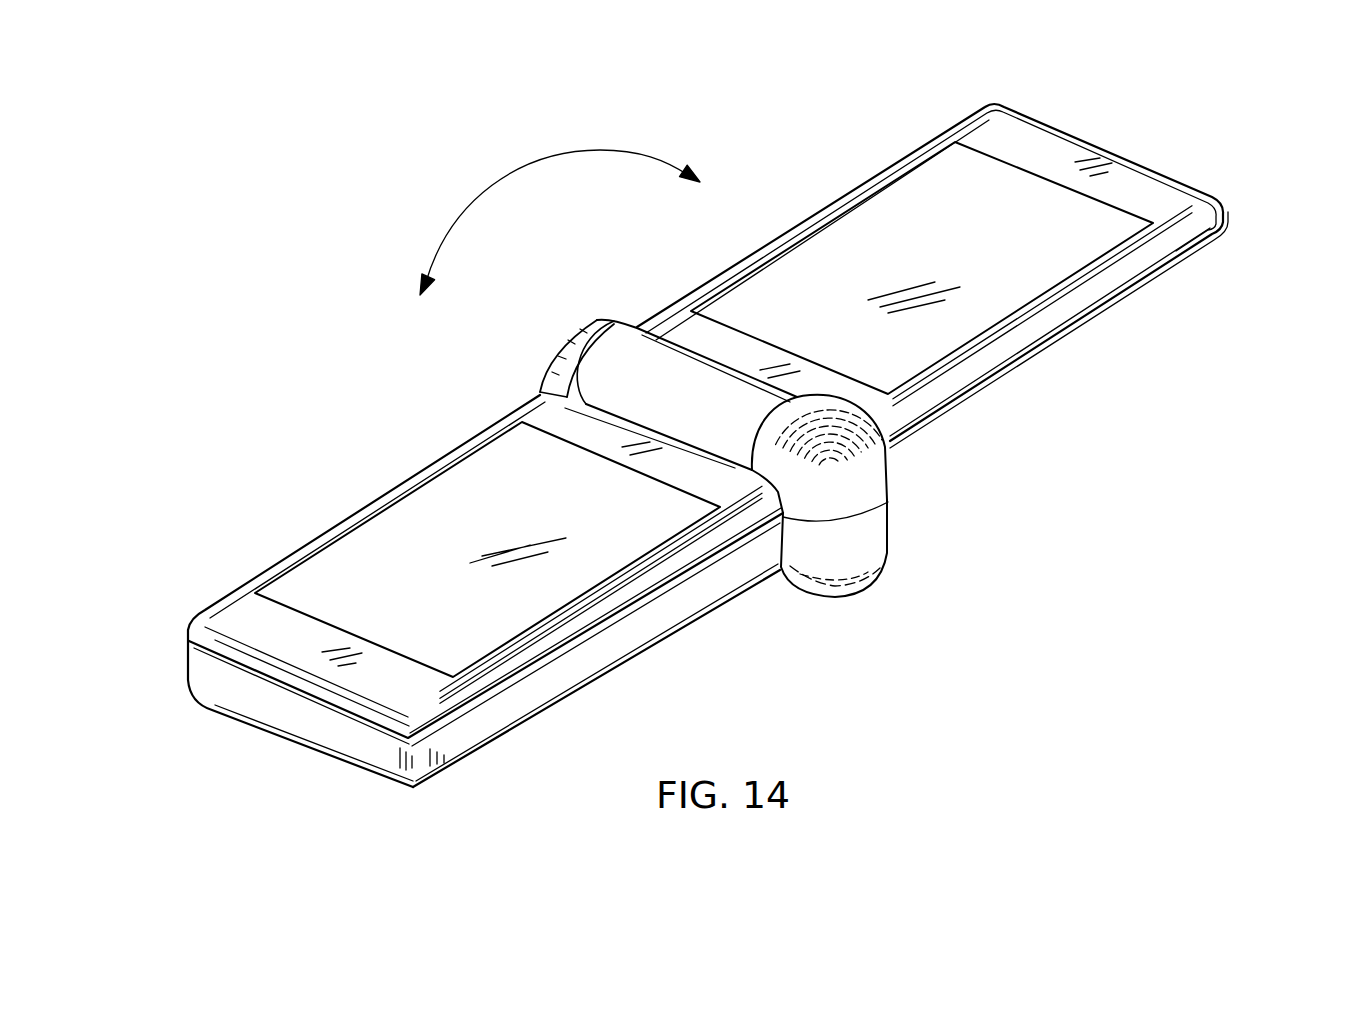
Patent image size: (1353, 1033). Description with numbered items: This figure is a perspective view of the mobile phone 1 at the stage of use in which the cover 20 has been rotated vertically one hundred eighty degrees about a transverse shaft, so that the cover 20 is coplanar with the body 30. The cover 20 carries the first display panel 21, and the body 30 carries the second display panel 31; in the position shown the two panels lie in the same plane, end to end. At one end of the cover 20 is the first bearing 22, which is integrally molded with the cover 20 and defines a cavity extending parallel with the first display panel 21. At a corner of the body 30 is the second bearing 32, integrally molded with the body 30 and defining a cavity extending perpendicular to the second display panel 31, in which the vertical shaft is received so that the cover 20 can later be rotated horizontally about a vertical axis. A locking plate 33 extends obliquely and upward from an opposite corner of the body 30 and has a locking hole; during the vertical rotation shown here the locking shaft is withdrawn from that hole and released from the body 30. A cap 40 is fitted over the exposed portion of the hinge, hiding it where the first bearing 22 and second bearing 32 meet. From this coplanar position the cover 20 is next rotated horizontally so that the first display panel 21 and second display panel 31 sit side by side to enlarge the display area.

The mobile phone 1 is at (385, 118).
The cover 20 is at (1150, 188).
The first display panel 21 is at (938, 213).
The first bearing 22 is at (660, 360).
The body 30 is at (270, 702).
The second display panel 31 is at (397, 595).
The second bearing 32 is at (865, 537).
The locking plate 33 is at (566, 334).
The cap 40 is at (888, 455).